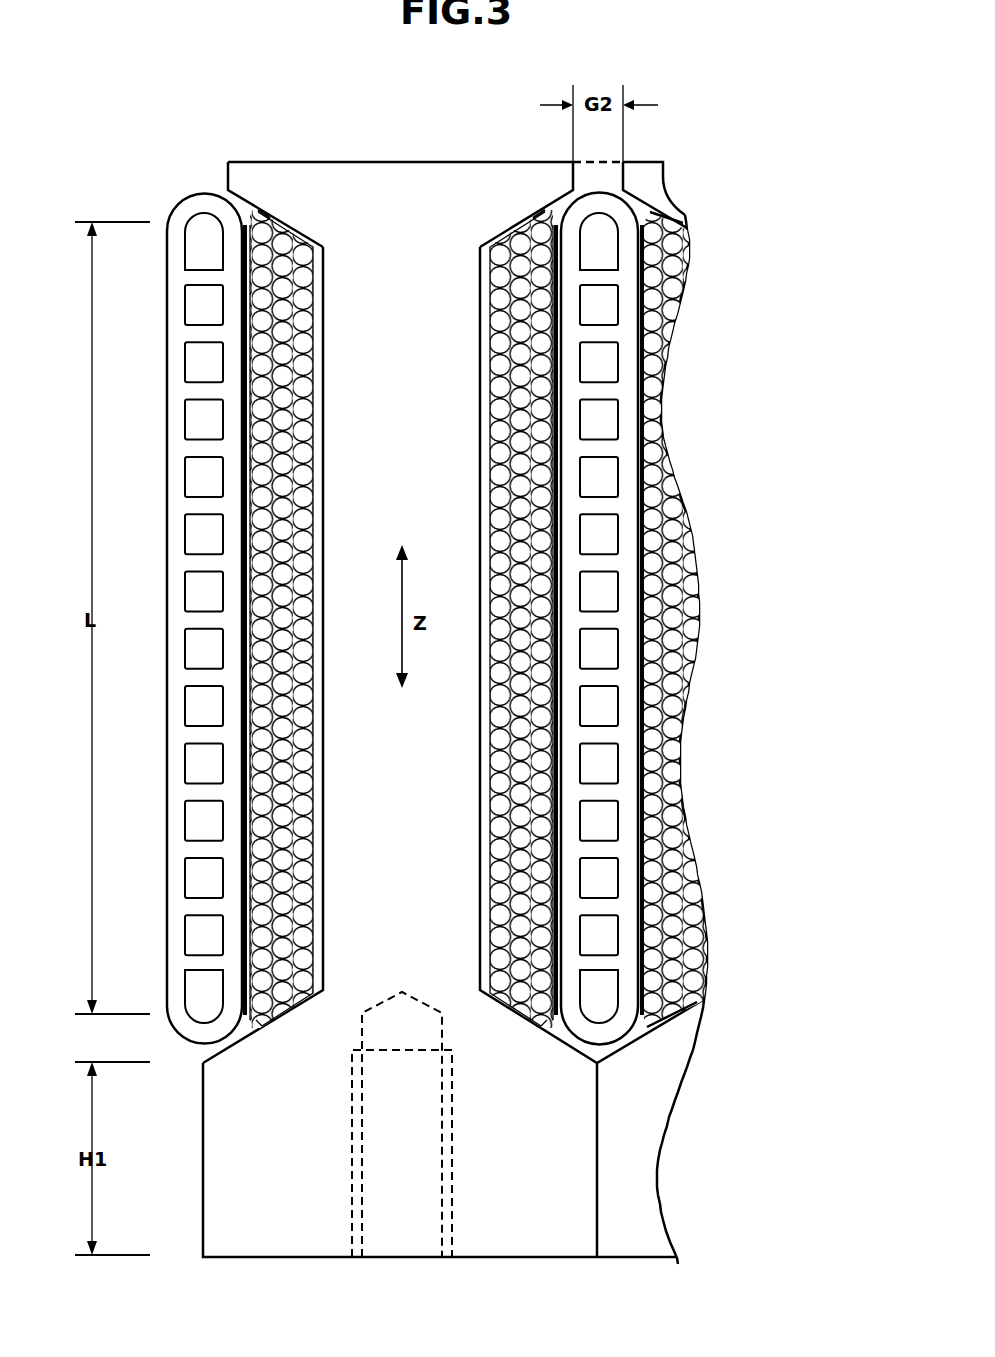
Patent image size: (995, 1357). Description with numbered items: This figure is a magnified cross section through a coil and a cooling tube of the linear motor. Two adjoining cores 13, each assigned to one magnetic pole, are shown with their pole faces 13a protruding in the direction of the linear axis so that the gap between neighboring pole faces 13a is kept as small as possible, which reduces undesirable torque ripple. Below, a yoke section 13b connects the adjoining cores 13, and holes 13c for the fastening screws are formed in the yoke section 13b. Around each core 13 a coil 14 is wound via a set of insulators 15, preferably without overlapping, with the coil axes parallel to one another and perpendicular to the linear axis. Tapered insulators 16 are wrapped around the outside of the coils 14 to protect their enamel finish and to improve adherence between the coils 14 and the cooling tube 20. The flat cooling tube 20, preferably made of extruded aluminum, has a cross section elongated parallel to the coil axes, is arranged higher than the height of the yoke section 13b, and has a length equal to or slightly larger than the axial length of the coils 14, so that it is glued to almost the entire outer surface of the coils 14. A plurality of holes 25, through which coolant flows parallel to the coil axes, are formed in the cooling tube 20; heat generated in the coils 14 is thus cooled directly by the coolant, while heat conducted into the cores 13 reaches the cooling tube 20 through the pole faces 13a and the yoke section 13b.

The core 13 is at (360, 270).
The pole face 13a is at (445, 160).
The yoke section 13b is at (513, 1228).
The hole 13c is at (352, 1243).
The coil 14 is at (290, 240).
The insulator 15 is at (268, 216).
The tapered insulator 16 is at (245, 228).
The cooling tube 20 is at (200, 193).
The hole 25 is at (200, 255).